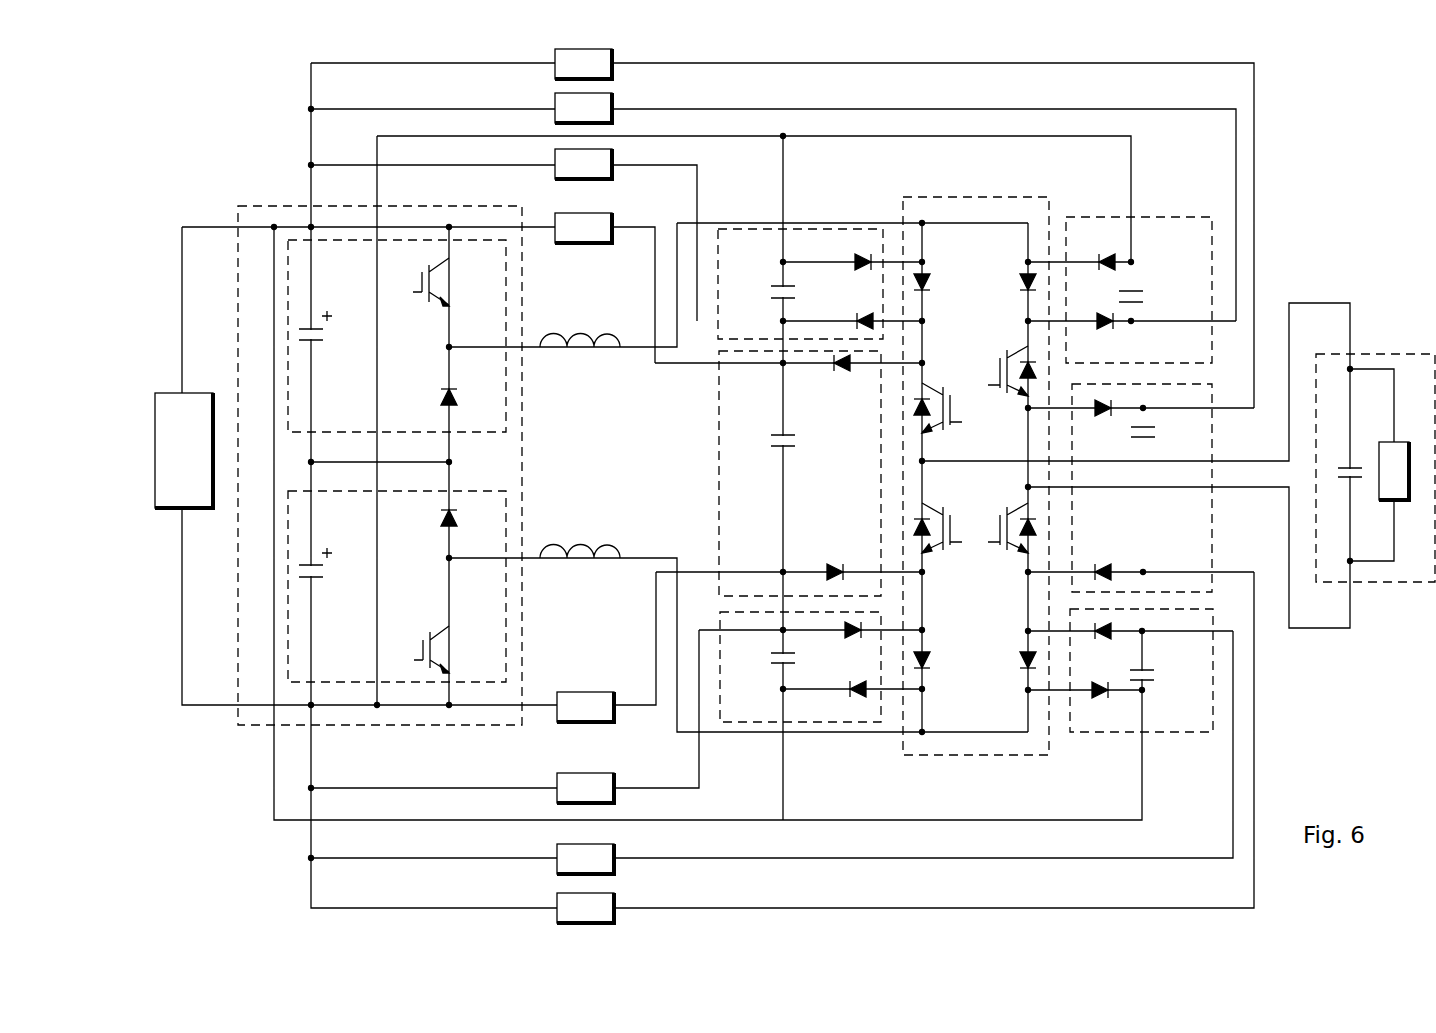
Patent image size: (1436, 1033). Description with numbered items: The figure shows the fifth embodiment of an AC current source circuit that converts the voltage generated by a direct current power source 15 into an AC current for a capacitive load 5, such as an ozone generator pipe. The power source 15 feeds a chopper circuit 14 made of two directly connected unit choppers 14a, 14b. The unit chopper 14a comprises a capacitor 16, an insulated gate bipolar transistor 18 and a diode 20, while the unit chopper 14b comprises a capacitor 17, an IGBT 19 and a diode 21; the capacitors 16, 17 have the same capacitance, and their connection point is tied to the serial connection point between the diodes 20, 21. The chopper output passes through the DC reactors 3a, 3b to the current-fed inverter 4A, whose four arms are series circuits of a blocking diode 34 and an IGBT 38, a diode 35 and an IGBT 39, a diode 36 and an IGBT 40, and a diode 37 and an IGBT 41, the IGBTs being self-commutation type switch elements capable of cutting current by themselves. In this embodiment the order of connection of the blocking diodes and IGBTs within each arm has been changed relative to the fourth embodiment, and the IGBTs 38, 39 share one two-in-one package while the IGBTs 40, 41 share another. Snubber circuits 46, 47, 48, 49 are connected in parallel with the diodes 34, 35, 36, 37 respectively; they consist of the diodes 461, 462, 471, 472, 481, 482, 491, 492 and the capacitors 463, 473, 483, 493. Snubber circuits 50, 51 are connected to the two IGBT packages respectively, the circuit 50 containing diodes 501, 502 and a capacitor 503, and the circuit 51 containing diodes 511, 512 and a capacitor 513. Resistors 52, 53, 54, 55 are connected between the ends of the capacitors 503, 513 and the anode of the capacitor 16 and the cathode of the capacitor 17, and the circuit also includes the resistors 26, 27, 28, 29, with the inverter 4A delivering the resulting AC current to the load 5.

The capacitive load 5 is at (1375, 352).
The DC reactor 3a is at (578, 335).
The DC reactor 3b is at (580, 570).
The current-fed inverter 4A is at (948, 197).
The chopper circuit 14 is at (522, 430).
The unit chopper 14a is at (506, 378).
The unit chopper 14b is at (506, 522).
The direct current power source 15 is at (200, 465).
The capacitor 16 is at (318, 342).
The capacitor 17 is at (318, 579).
The insulated gate bipolar transistor 18 is at (440, 281).
The IGBT 19 is at (440, 650).
The diode 20 is at (437, 399).
The diode 21 is at (440, 521).
The resistor 26 is at (603, 181).
The resistor 27 is at (602, 771).
The resistor 28 is at (616, 848).
The resistor 29 is at (614, 103).
The diode 34 is at (932, 285).
The diode 35 is at (932, 662).
The diode 36 is at (1020, 285).
The diode 37 is at (1020, 664).
The IGBT 38 is at (945, 390).
The IGBT 39 is at (945, 548).
The IGBT 40 is at (1008, 355).
The IGBT 41 is at (1008, 548).
The snubber circuit 46 is at (850, 225).
The diode 461 is at (858, 254).
The diode 462 is at (865, 314).
The capacitor 463 is at (769, 285).
The snubber circuit 47 is at (773, 725).
The diode 471 is at (850, 636).
The diode 472 is at (857, 698).
The capacitor 473 is at (770, 650).
The snubber circuit 48 is at (1110, 217).
The diode 481 is at (1108, 248).
The diode 482 is at (1106, 329).
The capacitor 483 is at (1138, 298).
The snubber circuit 49 is at (1115, 733).
The diode 491 is at (1102, 641).
The diode 492 is at (1100, 697).
The capacitor 493 is at (1155, 680).
The snubber circuit 50 is at (718, 483).
The diode 501 is at (836, 373).
The diode 502 is at (835, 566).
The capacitor 503 is at (790, 450).
The snubber circuit 51 is at (1212, 565).
The diode 511 is at (1100, 418).
The diode 512 is at (1102, 566).
The capacitor 513 is at (1158, 433).
The resistor 52 is at (600, 245).
The resistor 53 is at (570, 690).
The resistor 54 is at (614, 56).
The resistor 55 is at (616, 895).